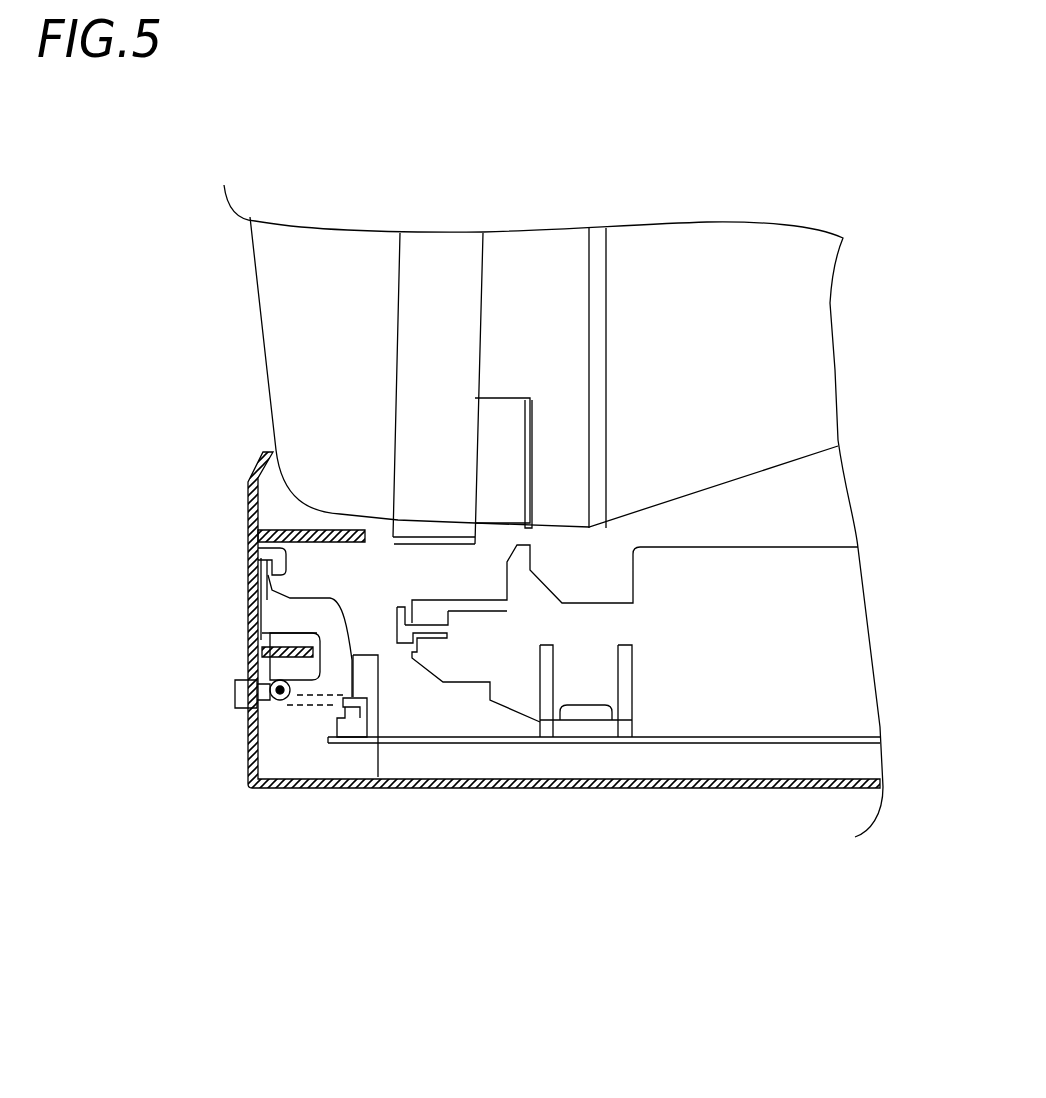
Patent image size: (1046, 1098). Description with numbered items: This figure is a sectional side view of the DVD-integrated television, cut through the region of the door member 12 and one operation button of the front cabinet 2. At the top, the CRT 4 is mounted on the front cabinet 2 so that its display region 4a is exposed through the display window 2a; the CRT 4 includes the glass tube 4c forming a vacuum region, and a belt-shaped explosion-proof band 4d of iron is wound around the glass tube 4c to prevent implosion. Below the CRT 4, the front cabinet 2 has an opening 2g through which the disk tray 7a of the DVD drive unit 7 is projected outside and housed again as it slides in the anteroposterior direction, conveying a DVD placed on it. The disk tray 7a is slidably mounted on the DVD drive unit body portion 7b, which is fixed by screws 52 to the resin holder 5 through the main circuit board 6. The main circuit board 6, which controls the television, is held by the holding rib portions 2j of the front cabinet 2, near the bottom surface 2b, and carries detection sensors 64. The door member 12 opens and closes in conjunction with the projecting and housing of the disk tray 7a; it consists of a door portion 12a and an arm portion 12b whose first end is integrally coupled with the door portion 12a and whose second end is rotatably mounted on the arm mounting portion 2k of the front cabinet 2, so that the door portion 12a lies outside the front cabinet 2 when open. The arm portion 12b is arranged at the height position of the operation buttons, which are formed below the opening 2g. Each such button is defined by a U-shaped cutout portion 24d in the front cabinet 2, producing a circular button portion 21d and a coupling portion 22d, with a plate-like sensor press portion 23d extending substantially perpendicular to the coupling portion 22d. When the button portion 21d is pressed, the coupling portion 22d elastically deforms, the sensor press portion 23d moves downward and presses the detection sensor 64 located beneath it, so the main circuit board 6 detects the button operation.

The CRT 4 is at (325, 283).
The glass tube 4c is at (325, 315).
The display region 4a is at (252, 343).
The explosion-proof band 4d is at (437, 385).
The display window 2a is at (263, 452).
The disk tray 7a is at (437, 590).
The opening 2g is at (250, 568).
The door member 12 is at (247, 575).
The door portion 12a is at (247, 598).
The arm mounting portion 2k is at (248, 648).
The U-shaped cutout portion 24d is at (252, 672).
The button portion 21d is at (235, 690).
The coupling portion 22d is at (253, 728).
The holding rib portion 2j is at (348, 763).
The detection sensor 64 is at (357, 730).
The sensor press portion 23d is at (378, 683).
The arm portion 12b is at (355, 660).
The bottom surface 2b is at (542, 768).
The front cabinet 2 is at (555, 770).
The screw 52 is at (580, 713).
The holder 5 is at (638, 765).
The main circuit board 6 is at (678, 741).
The DVD drive unit 7 is at (730, 712).
The DVD drive unit body portion 7b is at (768, 708).